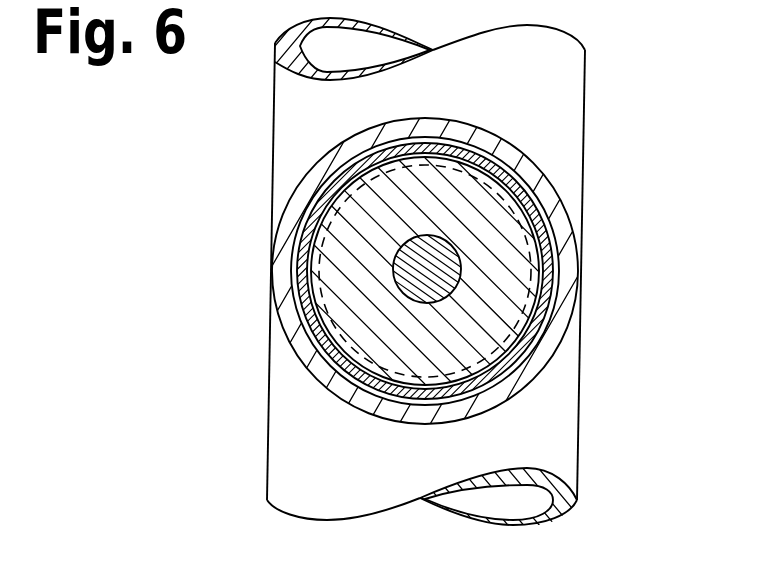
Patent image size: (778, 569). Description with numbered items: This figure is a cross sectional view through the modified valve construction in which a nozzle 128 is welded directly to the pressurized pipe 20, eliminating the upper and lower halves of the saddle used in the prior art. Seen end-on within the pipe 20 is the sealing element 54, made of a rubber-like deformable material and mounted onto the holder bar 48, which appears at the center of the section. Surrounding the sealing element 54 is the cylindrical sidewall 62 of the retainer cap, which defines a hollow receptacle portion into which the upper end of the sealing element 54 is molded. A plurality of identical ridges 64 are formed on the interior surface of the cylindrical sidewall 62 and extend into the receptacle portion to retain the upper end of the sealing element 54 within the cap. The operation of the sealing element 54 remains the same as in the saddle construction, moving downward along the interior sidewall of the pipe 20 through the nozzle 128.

The pipe 20 is at (558, 425).
The holder bar 48 is at (440, 250).
The sealing element 54 is at (493, 303).
The cylindrical sidewall 62 is at (330, 193).
The ridges 64 is at (313, 247).
The nozzle 128 is at (295, 322).